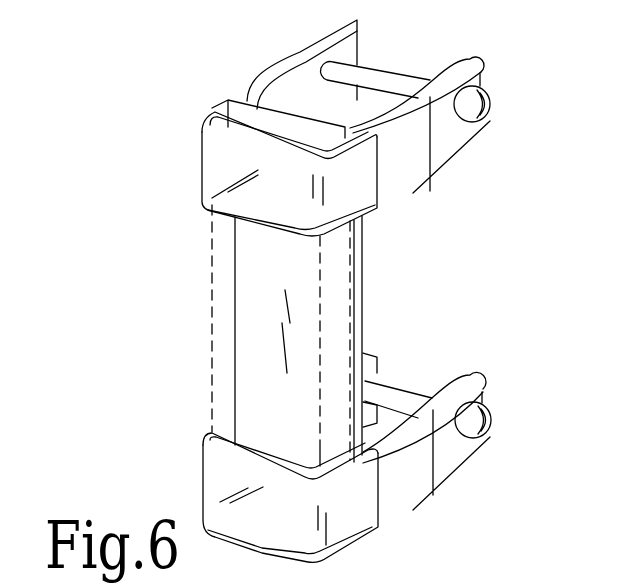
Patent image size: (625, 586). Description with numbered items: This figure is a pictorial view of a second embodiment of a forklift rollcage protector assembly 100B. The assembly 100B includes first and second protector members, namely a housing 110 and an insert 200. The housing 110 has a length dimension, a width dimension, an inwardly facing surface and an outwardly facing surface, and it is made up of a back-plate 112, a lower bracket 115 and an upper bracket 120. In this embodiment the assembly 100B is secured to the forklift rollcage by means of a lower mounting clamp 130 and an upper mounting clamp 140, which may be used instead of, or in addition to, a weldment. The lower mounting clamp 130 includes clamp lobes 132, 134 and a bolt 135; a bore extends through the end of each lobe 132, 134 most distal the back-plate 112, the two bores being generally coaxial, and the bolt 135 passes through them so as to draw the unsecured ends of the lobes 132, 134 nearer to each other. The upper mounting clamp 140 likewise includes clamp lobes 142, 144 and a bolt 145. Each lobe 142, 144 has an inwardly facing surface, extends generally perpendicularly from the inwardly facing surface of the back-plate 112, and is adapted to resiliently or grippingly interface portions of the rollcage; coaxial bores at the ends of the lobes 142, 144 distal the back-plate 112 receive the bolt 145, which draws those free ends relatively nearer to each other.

The rollcage protector assembly 100B is at (141, 96).
The housing 110 is at (375, 296).
The back-plate 112 is at (235, 275).
The lower bracket 115 is at (209, 478).
The upper bracket 120 is at (206, 168).
The lower mounting clamp 130 is at (422, 514).
The clamp lobe 132 is at (450, 447).
The clamp lobe 134 is at (378, 372).
The bolt 135 is at (410, 397).
The upper mounting clamp 140 is at (423, 199).
The clamp lobe 142 is at (450, 137).
The clamp lobe 144 is at (350, 53).
The bolt 145 is at (409, 79).
The insert 200 is at (213, 301).